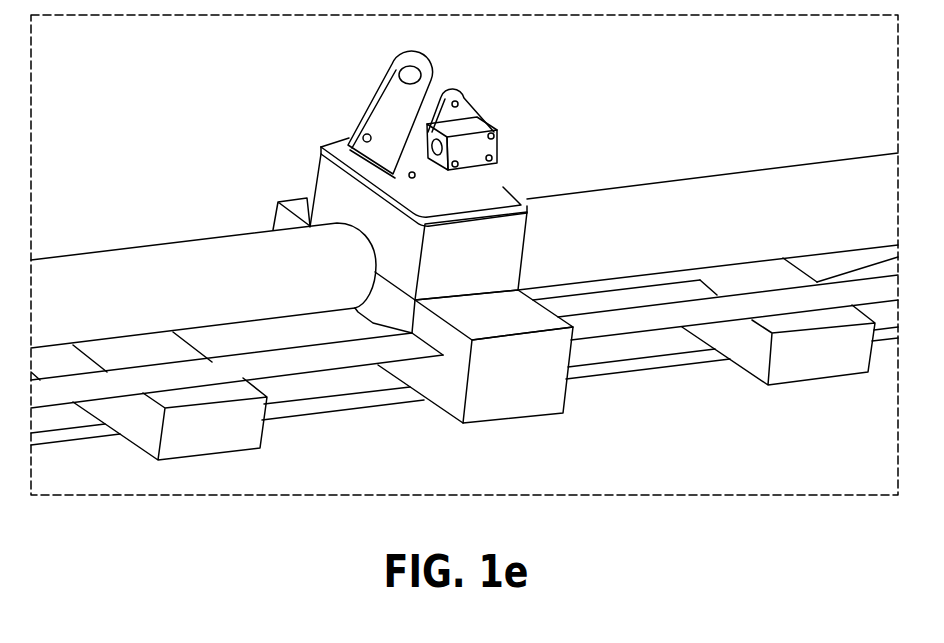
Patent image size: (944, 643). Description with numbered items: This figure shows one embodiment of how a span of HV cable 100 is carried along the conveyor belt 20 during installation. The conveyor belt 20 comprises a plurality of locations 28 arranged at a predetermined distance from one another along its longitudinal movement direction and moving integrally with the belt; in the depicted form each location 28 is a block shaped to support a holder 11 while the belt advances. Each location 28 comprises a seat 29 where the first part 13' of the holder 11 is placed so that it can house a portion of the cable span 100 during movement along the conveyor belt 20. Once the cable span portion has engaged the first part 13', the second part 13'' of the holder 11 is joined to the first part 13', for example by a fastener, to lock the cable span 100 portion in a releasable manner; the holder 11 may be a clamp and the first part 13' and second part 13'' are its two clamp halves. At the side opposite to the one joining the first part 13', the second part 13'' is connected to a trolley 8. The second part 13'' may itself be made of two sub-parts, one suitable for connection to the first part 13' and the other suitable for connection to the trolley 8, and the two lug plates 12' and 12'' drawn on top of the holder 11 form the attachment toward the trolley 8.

The trolley 8 is at (456, 111).
The holder 11 is at (365, 175).
The first lug plate 12' is at (355, 114).
The second lug plate 12'' is at (411, 96).
The first part of the holder 13' is at (252, 230).
The second part of the holder 13'' is at (251, 183).
The conveyor belt 20 is at (299, 360).
The location 28 is at (545, 393).
The seat 29 is at (373, 323).
The HV cable 100 is at (719, 202).